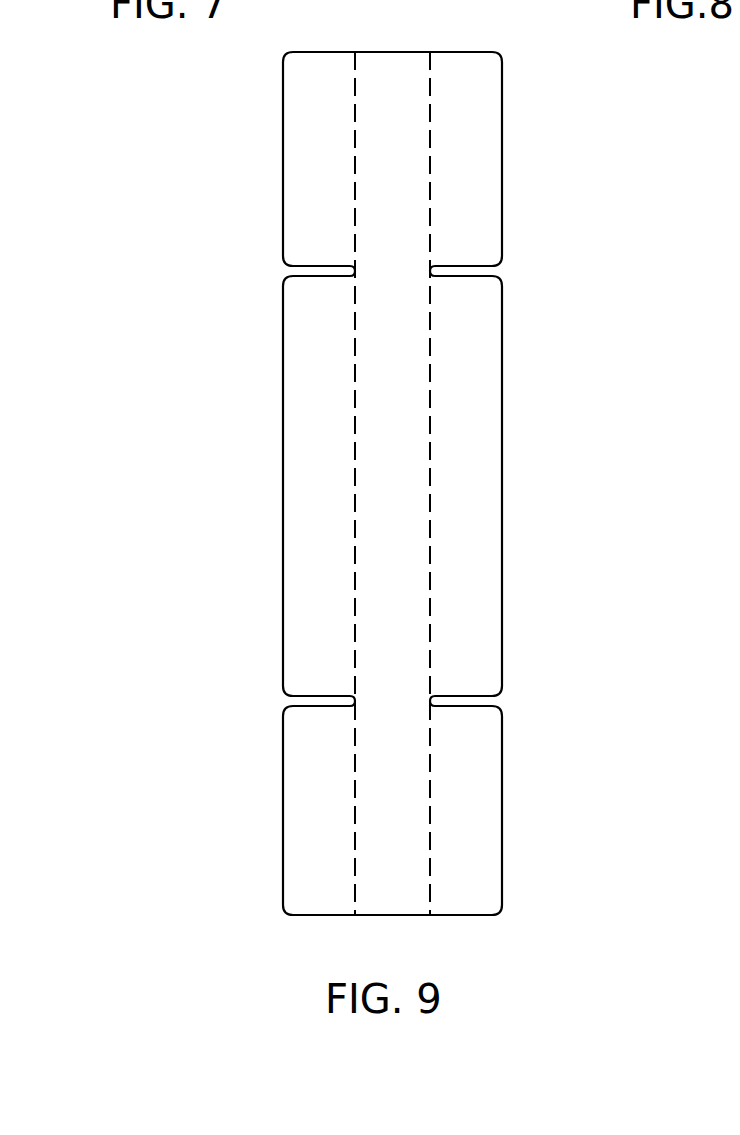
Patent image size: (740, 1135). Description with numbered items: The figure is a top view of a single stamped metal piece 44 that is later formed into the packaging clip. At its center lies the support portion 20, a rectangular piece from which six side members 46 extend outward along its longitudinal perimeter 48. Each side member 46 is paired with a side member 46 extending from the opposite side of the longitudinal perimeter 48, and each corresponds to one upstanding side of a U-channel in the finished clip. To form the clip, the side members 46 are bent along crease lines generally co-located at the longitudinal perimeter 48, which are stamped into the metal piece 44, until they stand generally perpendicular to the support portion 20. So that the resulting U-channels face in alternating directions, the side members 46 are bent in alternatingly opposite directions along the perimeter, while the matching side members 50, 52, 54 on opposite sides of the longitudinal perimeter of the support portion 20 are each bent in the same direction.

The support portion 20 is at (380, 900).
The stamped metal piece 44 is at (137, 337).
The side members 46 is at (303, 75).
The longitudinal perimeter 48 is at (355, 95).
The matching side members 50 is at (283, 173).
The matching side members 52 is at (283, 490).
The matching side members 54 is at (283, 812).